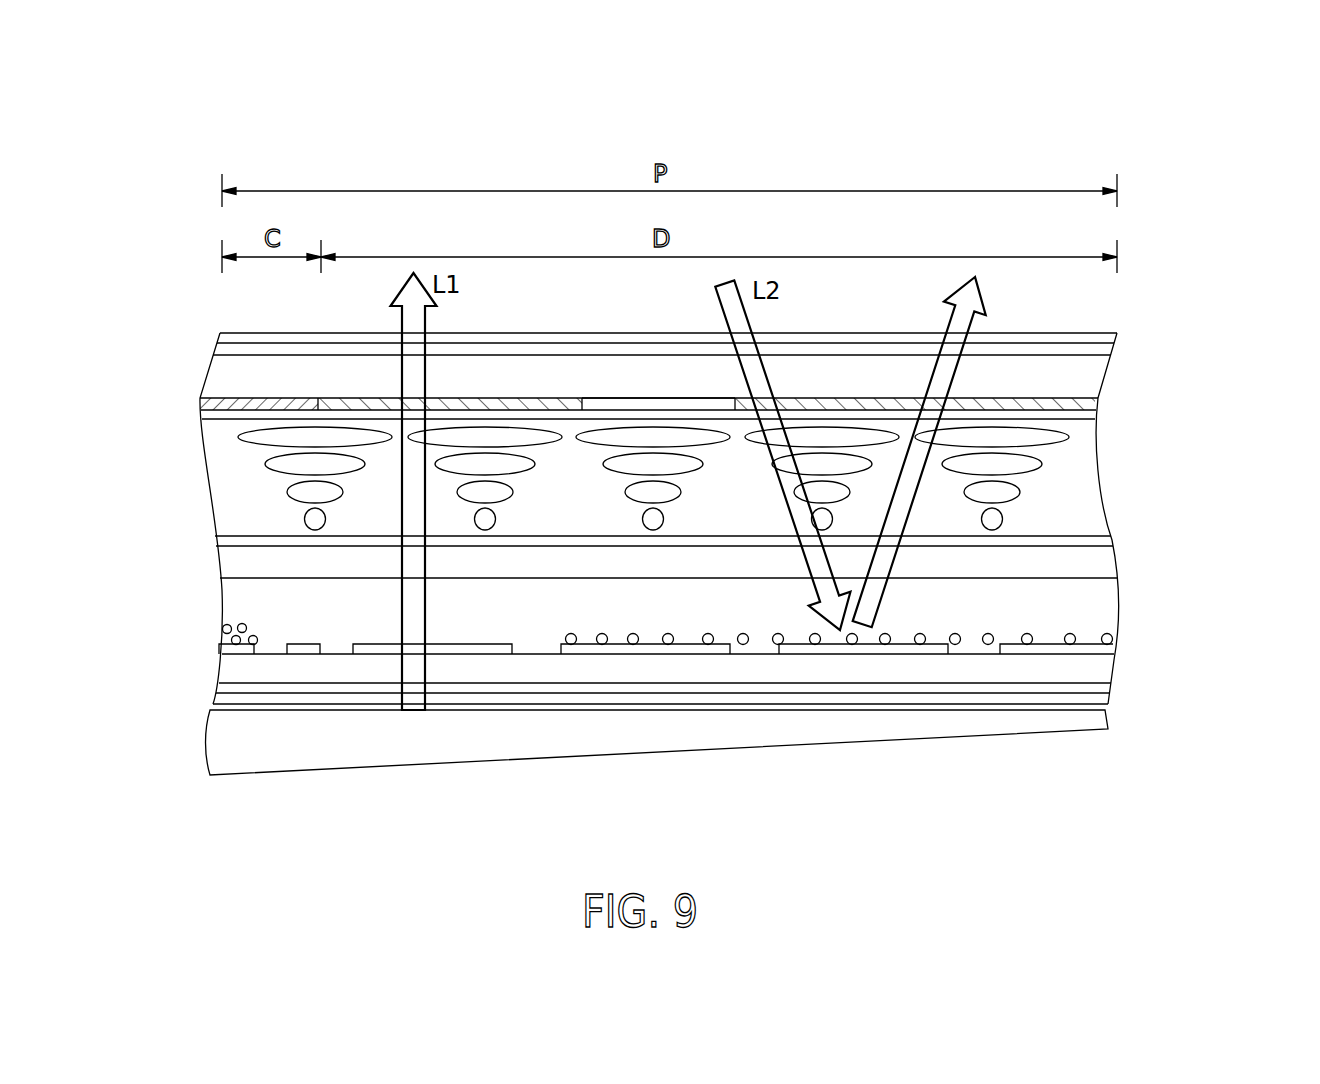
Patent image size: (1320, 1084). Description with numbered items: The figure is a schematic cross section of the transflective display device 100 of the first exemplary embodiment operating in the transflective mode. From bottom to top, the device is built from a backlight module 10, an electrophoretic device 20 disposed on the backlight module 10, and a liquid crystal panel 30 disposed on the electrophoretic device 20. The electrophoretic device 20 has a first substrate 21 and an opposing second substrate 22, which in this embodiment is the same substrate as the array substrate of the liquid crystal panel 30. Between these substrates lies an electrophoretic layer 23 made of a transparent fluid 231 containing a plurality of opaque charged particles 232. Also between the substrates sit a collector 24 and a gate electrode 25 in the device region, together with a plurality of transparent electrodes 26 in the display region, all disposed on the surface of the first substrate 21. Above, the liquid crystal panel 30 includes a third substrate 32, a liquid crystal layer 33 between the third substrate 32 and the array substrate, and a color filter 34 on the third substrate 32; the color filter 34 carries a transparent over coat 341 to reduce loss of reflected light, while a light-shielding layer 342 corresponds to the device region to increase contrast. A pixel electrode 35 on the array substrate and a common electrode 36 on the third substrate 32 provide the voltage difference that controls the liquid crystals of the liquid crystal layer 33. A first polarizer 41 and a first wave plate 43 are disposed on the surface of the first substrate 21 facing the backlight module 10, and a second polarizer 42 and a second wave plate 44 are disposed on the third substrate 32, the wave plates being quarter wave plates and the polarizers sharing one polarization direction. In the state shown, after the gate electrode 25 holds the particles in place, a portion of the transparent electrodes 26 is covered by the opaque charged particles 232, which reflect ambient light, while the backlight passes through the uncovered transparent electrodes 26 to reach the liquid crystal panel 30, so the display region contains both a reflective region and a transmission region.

The transflective display device 100 is at (1172, 150).
The backlight module 10 is at (188, 708).
The electrophoretic device 20 is at (188, 558).
The liquid crystal panel 30 is at (188, 376).
The first substrate 21 is at (1107, 667).
The second substrate 22 is at (1113, 563).
The electrophoretic layer 23 is at (1118, 602).
The transparent fluid 231 is at (1112, 638).
The opaque charged particles 232 is at (222, 634).
The collector 24 is at (222, 655).
The gate electrode 25 is at (305, 655).
The transparent electrodes 26 is at (440, 655).
The third substrate 32 is at (1100, 381).
The liquid crystal layer 33 is at (1095, 472).
The color filter 34 is at (1097, 405).
The over coat 341 is at (650, 398).
The light-shielding layer 342 is at (258, 398).
The pixel electrode 35 is at (1112, 542).
The common electrode 36 is at (1097, 415).
The first polarizer 41 is at (1107, 701).
The second polarizer 42 is at (1115, 337).
The first wave plate 43 is at (1107, 688).
The second wave plate 44 is at (1112, 350).